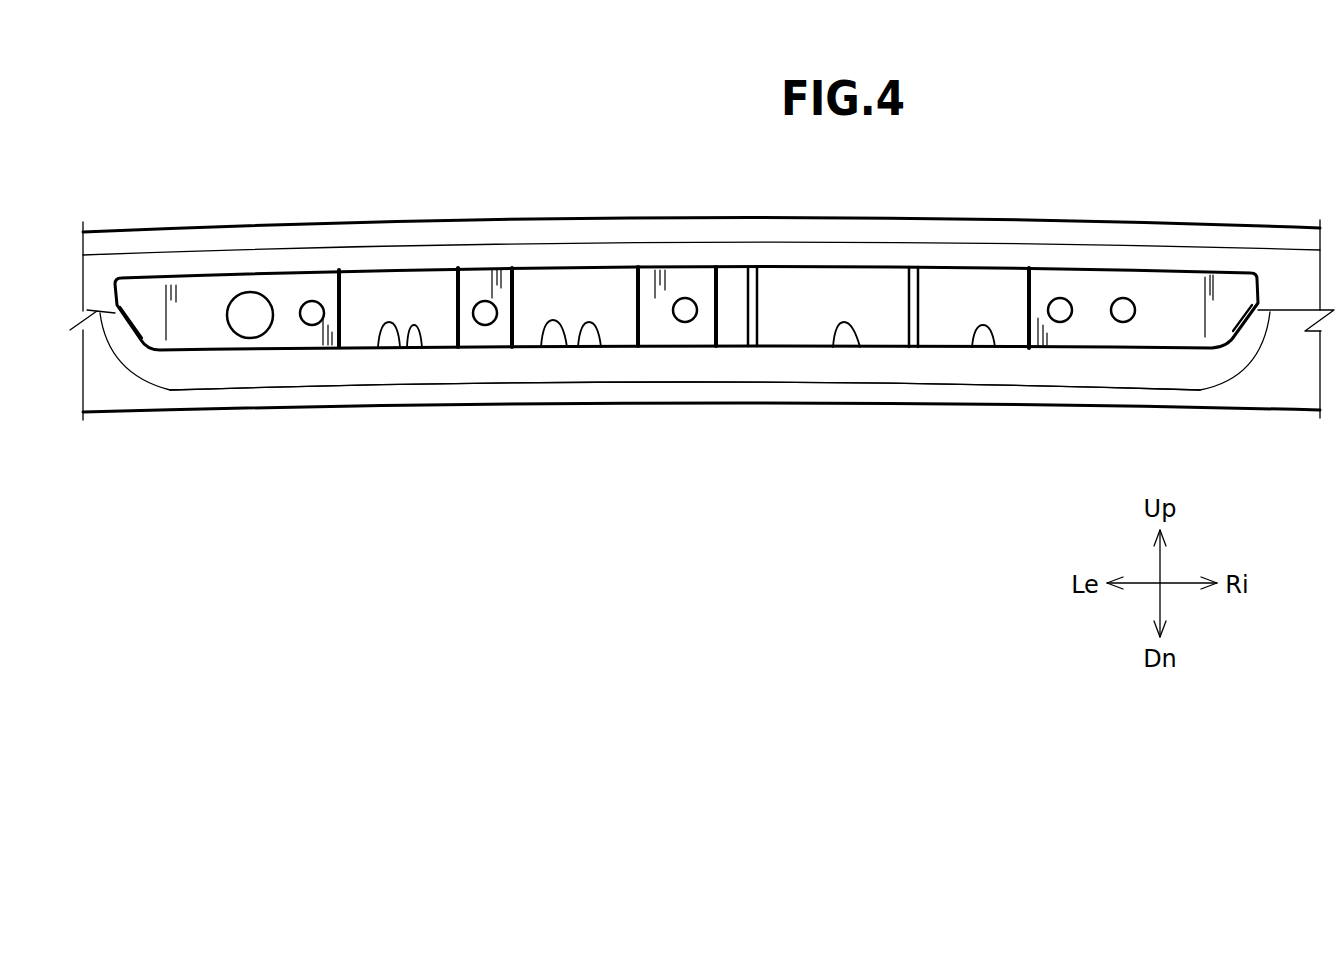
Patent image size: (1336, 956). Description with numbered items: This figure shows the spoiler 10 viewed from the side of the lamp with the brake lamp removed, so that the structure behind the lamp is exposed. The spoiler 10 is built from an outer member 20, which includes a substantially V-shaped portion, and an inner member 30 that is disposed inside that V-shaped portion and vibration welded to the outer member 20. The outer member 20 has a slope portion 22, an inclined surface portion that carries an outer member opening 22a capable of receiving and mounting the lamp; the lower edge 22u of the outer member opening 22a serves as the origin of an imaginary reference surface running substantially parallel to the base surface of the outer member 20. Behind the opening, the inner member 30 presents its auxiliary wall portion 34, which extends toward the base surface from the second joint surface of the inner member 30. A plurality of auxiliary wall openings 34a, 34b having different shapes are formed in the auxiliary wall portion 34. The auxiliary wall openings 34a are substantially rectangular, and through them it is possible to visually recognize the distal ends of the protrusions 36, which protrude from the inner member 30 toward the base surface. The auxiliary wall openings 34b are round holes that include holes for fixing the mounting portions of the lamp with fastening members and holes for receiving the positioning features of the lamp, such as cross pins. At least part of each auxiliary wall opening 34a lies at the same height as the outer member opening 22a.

The spoiler 10 is at (87, 122).
The outer member 20 is at (251, 218).
The slope portion 22 is at (121, 397).
The lower edge of the outer member opening 22u is at (690, 364).
The outer member opening 22a is at (685, 386).
The inner member 30 is at (198, 297).
The auxiliary wall portion 34 is at (688, 280).
The auxiliary wall openings 34a is at (457, 292).
The auxiliary wall openings 34b is at (256, 300).
The protrusions 36 is at (400, 349).